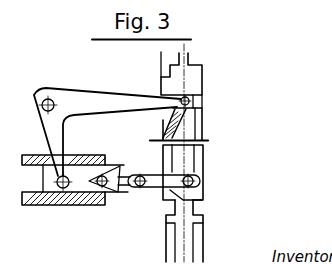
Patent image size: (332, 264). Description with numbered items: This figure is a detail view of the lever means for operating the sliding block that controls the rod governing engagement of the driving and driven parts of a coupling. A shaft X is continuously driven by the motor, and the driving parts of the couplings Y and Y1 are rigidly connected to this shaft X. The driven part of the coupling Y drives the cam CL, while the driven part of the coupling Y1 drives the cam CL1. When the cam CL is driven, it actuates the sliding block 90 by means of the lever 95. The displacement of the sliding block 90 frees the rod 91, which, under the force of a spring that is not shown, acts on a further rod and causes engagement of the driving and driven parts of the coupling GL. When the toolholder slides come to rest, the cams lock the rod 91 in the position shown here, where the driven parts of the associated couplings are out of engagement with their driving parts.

The sliding block 90 is at (81, 186).
The rod 91 is at (122, 195).
The lever 95 is at (81, 103).
The shaft X is at (158, 124).
The coupling Y is at (196, 61).
The cam CL is at (197, 123).
The cam CL1 is at (196, 154).
The coupling Y1 is at (199, 236).